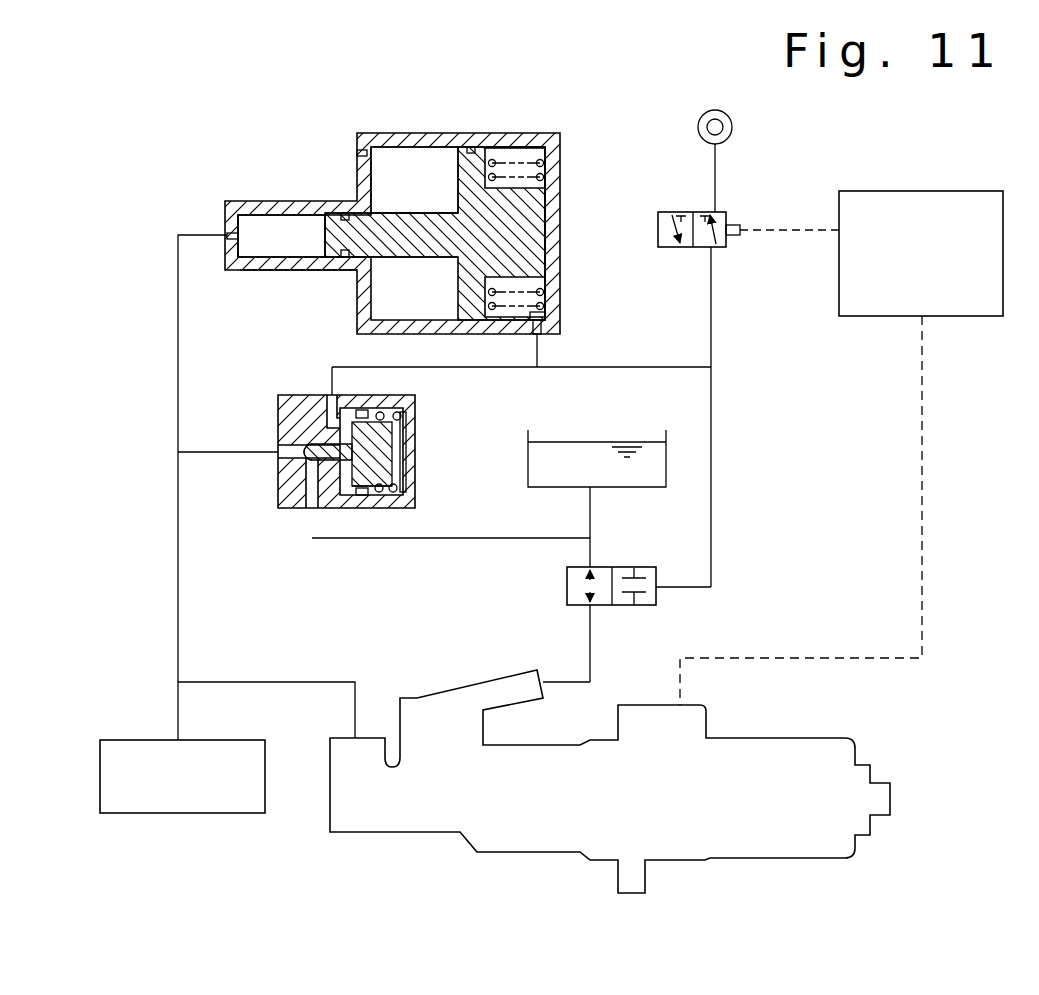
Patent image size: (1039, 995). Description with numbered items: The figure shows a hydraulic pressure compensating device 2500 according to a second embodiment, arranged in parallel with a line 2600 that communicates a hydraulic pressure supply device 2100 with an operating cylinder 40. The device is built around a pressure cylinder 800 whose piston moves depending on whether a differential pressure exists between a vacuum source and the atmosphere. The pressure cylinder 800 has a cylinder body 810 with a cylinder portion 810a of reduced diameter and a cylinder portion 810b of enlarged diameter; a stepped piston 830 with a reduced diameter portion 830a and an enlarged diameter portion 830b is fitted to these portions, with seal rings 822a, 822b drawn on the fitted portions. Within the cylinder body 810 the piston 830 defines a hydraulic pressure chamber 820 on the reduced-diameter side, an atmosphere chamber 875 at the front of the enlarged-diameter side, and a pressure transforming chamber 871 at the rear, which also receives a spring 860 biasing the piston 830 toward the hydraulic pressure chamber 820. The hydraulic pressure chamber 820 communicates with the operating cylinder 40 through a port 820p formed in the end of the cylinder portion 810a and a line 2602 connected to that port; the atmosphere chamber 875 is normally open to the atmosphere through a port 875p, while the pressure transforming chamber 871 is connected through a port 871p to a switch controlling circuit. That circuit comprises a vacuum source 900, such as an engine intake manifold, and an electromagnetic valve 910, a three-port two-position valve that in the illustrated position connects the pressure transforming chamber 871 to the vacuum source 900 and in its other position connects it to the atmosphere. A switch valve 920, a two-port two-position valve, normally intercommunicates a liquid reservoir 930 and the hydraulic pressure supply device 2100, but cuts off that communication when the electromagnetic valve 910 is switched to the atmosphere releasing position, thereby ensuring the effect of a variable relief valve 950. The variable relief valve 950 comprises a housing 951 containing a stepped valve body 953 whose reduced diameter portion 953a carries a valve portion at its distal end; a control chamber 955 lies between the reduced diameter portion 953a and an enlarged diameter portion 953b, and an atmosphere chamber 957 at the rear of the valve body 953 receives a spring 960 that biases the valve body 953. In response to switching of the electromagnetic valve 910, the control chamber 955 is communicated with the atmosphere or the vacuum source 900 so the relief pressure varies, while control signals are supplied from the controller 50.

The hydraulic pressure compensating device 2500 is at (242, 172).
The pressure cylinder 800 is at (450, 130).
The cylinder body 810 is at (560, 185).
The cylinder portion of a reduced diameter 810a is at (300, 270).
The cylinder portion of an enlarged diameter 810b is at (552, 257).
The hydraulic pressure chamber 820 is at (270, 250).
The port 820p is at (228, 235).
The seal 822a is at (342, 212).
The seal 822b is at (470, 148).
The piston 830 is at (432, 265).
The reduced diameter portion 830a is at (395, 230).
The enlarged diameter portion 830b is at (537, 232).
The spring 860 is at (540, 150).
The pressure transforming chamber 871 is at (540, 313).
The port or path 871p is at (537, 333).
The atmosphere chamber 875 is at (430, 150).
The port or path 875p is at (358, 153).
The vacuum source 900 is at (732, 127).
The electromagnetic valve 910 is at (714, 248).
The switch valve 920 is at (656, 600).
The liquid reservoir 930 is at (665, 455).
The variable relief valve 950 is at (283, 505).
The housing 951 is at (285, 425).
The stepped valve body 953 is at (410, 440).
The reduced diameter portion 953a is at (310, 445).
The enlarged diameter portion 953b is at (370, 470).
The control chamber 955 is at (395, 412).
The atmosphere chamber 957 is at (404, 468).
The spring 960 is at (401, 416).
The controller 50 is at (880, 316).
The operating cylinder 40 is at (163, 813).
The hydraulic pressure supply device 2100 is at (420, 834).
The line 2600 is at (250, 682).
The line 2602 is at (178, 355).